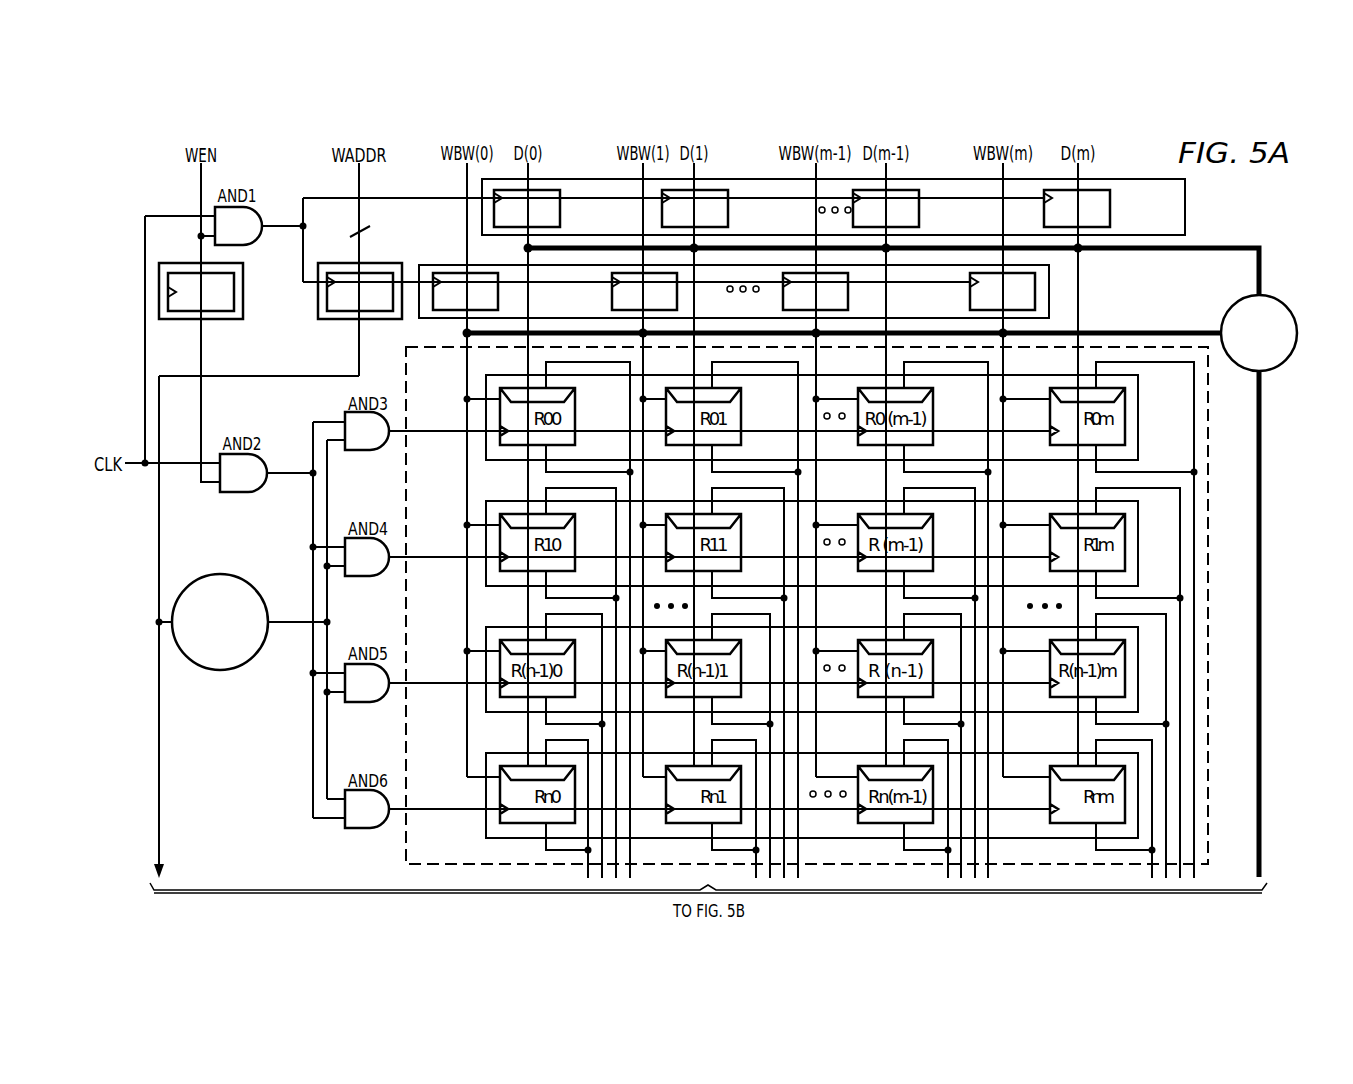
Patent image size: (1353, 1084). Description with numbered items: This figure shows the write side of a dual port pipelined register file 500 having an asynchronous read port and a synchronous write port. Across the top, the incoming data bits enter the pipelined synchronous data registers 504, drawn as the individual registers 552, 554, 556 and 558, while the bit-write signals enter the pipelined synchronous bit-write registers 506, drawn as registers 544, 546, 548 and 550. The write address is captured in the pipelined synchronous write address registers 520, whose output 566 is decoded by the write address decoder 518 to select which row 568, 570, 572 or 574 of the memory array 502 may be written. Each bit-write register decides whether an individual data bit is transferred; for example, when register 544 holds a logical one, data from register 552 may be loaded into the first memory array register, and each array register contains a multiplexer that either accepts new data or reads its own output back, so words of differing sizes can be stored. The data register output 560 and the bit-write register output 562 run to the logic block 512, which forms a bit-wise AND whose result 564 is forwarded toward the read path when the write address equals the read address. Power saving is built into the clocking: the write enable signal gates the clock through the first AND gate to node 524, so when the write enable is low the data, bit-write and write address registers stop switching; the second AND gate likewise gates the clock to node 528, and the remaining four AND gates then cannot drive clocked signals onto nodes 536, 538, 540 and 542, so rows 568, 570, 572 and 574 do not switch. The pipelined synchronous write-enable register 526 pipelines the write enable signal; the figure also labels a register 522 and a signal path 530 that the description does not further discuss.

The pipelined register file 500 is at (126, 191).
The memory array 502 is at (398, 847).
The pipelined synchronous data registers 504 is at (1192, 203).
The pipelined synchronous bit-write registers 506 is at (1058, 287).
The logic block 1 512 is at (1231, 303).
The write address decoder 518 is at (219, 672).
The pipelined synchronous write address registers 520 is at (343, 320).
The write enable register 522 is at (219, 320).
The node 524 is at (283, 227).
The pipelined synchronous write-enable register 526 is at (201, 392).
The node 528 is at (288, 475).
The decoder output line 530 is at (293, 626).
The node 536 is at (447, 430).
The node 538 is at (447, 556).
The node 540 is at (447, 682).
The node 542 is at (447, 808).
The register 544 is at (450, 272).
The register 546 is at (611, 291).
The register 548 is at (782, 291).
The register 550 is at (969, 292).
The register 552 is at (561, 209).
The register 554 is at (729, 209).
The register 556 is at (920, 209).
The register 558 is at (1111, 209).
The output of the pipelined synchronous data registers 560 is at (1226, 247).
The output of the pipelined synchronous bit-write registers 562 is at (1153, 331).
The result of the bit-wise AND operation 564 is at (1257, 766).
The output of the pipelined synchronous write address registers 566 is at (292, 375).
The row 568 is at (478, 452).
The row 570 is at (478, 578).
The row 572 is at (478, 704).
The row 574 is at (478, 830).